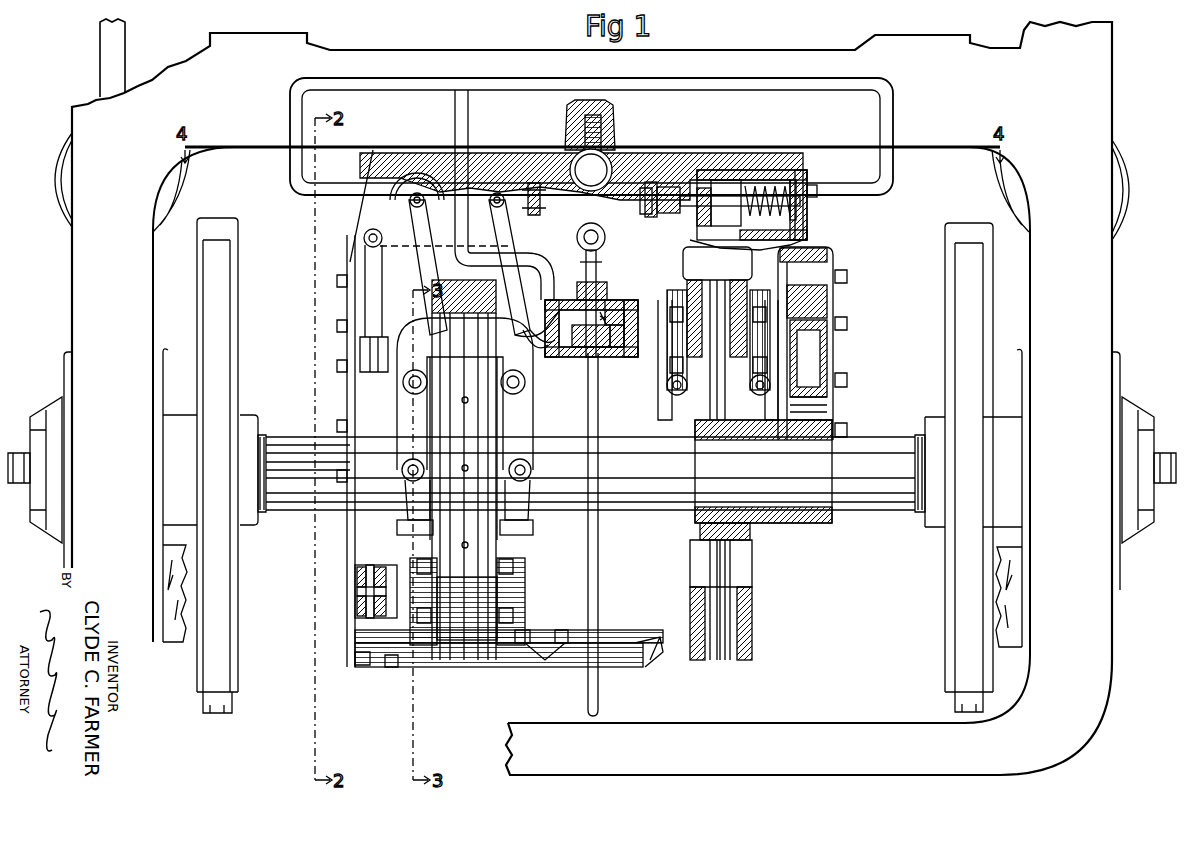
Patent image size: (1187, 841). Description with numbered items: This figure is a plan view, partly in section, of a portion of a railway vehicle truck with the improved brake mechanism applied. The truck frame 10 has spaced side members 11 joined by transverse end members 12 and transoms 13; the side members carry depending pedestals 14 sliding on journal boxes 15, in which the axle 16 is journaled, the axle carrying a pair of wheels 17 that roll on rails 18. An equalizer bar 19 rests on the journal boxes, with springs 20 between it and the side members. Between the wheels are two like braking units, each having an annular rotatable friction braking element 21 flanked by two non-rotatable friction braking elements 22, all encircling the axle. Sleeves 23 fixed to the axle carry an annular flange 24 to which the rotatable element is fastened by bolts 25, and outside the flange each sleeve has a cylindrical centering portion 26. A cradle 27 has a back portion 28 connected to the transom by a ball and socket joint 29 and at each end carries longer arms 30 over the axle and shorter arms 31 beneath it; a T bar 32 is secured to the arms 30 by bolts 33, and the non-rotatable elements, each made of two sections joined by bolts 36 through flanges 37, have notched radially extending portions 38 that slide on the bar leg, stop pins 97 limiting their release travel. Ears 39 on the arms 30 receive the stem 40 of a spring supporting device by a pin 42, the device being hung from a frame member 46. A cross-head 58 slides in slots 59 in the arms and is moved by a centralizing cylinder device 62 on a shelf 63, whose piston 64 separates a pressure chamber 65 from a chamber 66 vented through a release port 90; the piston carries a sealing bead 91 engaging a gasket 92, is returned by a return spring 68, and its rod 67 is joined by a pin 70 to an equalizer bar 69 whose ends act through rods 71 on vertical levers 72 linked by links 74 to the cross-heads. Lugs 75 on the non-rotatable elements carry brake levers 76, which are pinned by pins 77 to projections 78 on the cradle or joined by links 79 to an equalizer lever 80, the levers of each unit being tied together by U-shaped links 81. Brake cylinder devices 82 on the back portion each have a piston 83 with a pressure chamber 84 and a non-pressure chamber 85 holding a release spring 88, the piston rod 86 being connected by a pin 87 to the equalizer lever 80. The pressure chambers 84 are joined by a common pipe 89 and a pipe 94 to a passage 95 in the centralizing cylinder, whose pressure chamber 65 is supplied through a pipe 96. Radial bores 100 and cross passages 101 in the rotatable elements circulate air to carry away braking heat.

The truck frame 10 is at (1098, 45).
The side members 11 is at (92, 240).
The end members 12 is at (865, 762).
The transom 13 is at (733, 63).
The pedestals 14 is at (68, 365).
The journal boxes 15 is at (58, 400).
The axle 16 is at (298, 488).
The wheels 17 is at (232, 665).
The rails 18 is at (222, 705).
The equalizer bar 19 is at (110, 62).
The springs 20 is at (62, 152).
The rotatable friction braking element 21 is at (470, 650).
The non-rotatable friction braking elements 22 is at (448, 650).
The sleeves 23 is at (420, 490).
The annular flange 24 is at (700, 548).
The bolts 25 is at (750, 532).
The cylindrical centering portion 26 is at (410, 525).
The cradle 27 is at (820, 240).
The back portion 28 is at (735, 155).
The ball and socket joint 29 is at (605, 150).
The longer arms 30 is at (358, 638).
The shorter arms 31 is at (833, 428).
The T bar 32 is at (555, 660).
The bolts 33 is at (392, 662).
The bolts 36 is at (655, 357).
The flanges 37 is at (672, 268).
The radially extending portion 38 is at (445, 650).
The ears 39 is at (357, 580).
The stem 40 is at (362, 595).
The pin 42 is at (370, 568).
The member 46 is at (175, 630).
The cross-head 58 is at (833, 392).
The slots 59 is at (833, 412).
The fluid pressure controlled cylinder device 62 is at (520, 305).
The shelf 63 is at (548, 357).
The piston 64 is at (573, 357).
The pressure chamber 65 is at (630, 357).
The non-pressure chamber 66 is at (628, 310).
The piston rod 67 is at (587, 272).
The return spring 68 is at (598, 300).
The equalizer bar 69 is at (470, 240).
The pin 70 is at (590, 230).
The rod 71 is at (372, 290).
The lever 72 is at (365, 362).
The link 74 is at (833, 345).
The lugs 75 is at (408, 475).
The brake lever 76 is at (415, 400).
The pins 77 is at (366, 238).
The projections 78 is at (410, 200).
The links 79 is at (497, 200).
The equalizer lever 80 is at (540, 200).
The links 81 is at (430, 340).
The brake cylinder devices 82 is at (800, 190).
The piston 83 is at (805, 178).
The pressure chamber 84 is at (812, 192).
The non-pressure chamber 85 is at (765, 167).
The piston rod 86 is at (724, 190).
The pin 87 is at (655, 185).
The release spring 88 is at (785, 170).
The common pipe 89 is at (888, 135).
The release port 90 is at (575, 293).
The annular sealing bead 91 is at (597, 330).
The gasket 92 is at (625, 300).
The pipe 94 is at (462, 125).
The passage 95 is at (523, 340).
The pipe 96 is at (588, 525).
The stop pins 97 is at (548, 633).
The radial bores 100 is at (465, 398).
The cross passages 101 is at (708, 365).